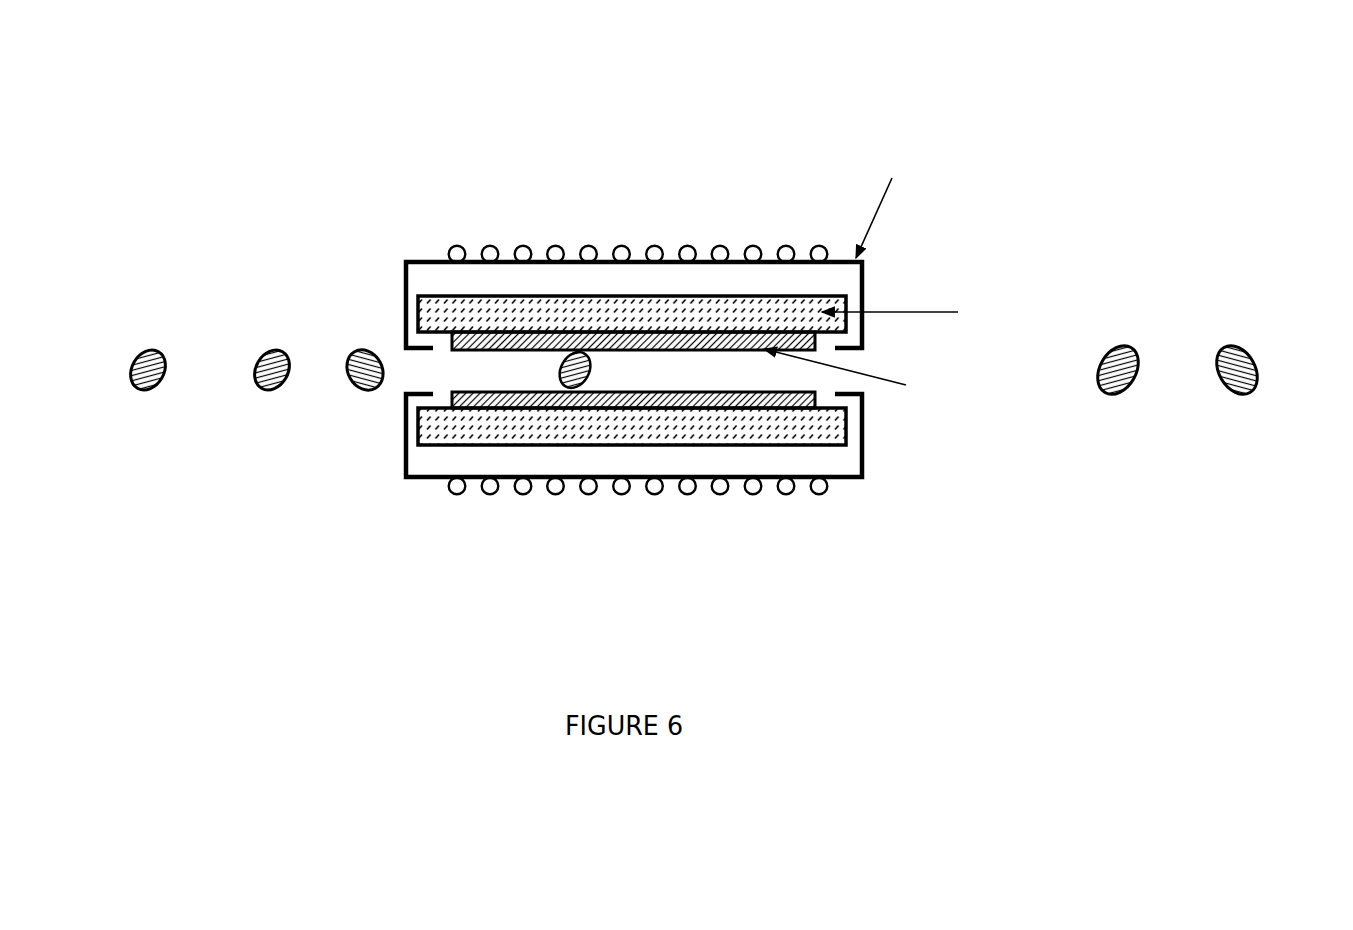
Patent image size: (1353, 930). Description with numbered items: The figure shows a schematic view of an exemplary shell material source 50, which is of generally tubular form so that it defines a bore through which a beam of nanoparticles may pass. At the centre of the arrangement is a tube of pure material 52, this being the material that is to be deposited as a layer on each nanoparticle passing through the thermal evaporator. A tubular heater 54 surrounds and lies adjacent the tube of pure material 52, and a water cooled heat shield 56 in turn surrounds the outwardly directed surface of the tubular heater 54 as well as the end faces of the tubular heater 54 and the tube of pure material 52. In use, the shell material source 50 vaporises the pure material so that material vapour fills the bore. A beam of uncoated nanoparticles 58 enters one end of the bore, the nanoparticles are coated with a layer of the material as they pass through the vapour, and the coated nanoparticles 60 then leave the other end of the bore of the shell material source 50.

The shell material source 50 is at (683, 302).
The tube of pure material 52 is at (405, 342).
The tubular heater 54 is at (405, 309).
The water cooled heat shield 56 is at (868, 283).
The uncoated nanoparticles 58 is at (1228, 348).
The coated nanoparticles 60 is at (140, 393).